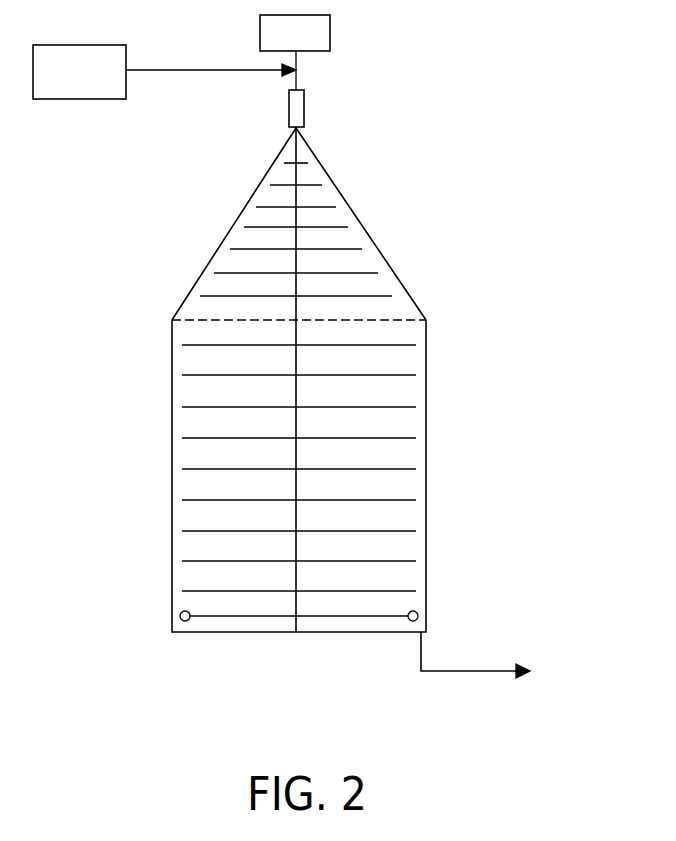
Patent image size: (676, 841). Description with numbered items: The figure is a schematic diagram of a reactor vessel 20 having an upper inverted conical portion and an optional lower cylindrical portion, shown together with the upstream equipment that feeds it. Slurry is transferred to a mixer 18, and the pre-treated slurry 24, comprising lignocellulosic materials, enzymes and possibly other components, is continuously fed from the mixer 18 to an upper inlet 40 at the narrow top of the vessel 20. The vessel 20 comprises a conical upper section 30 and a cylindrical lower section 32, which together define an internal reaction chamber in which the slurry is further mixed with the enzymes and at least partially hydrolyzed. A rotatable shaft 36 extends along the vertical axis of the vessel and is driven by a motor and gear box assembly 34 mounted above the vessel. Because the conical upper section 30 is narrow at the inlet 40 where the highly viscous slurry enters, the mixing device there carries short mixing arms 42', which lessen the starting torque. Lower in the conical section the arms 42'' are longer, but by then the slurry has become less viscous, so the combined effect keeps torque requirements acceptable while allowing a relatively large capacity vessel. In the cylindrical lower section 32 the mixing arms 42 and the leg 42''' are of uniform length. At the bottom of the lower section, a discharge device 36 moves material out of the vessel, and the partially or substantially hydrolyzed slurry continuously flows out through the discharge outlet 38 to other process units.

The mixer 18 is at (79, 99).
The pre-treated slurry 24 is at (173, 67).
The motor and gear box assembly 34 is at (331, 34).
The upper inlet 40 is at (298, 110).
The vessel 20 is at (416, 178).
The conical upper section 30 is at (238, 218).
The cylindrical lower section 32 is at (172, 427).
The short mixing arms 42' is at (339, 158).
The mixing arms in the lower portion of the conical section 42'' is at (333, 240).
The mixing arms 42 is at (267, 479).
The mixing leg 42''' is at (336, 458).
The rotatable shaft 36 is at (183, 622).
The discharge outlet 38 is at (472, 673).